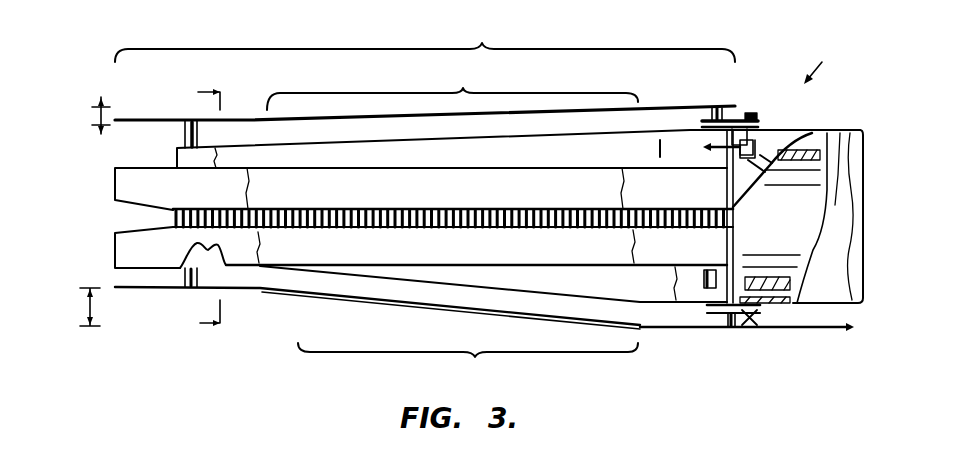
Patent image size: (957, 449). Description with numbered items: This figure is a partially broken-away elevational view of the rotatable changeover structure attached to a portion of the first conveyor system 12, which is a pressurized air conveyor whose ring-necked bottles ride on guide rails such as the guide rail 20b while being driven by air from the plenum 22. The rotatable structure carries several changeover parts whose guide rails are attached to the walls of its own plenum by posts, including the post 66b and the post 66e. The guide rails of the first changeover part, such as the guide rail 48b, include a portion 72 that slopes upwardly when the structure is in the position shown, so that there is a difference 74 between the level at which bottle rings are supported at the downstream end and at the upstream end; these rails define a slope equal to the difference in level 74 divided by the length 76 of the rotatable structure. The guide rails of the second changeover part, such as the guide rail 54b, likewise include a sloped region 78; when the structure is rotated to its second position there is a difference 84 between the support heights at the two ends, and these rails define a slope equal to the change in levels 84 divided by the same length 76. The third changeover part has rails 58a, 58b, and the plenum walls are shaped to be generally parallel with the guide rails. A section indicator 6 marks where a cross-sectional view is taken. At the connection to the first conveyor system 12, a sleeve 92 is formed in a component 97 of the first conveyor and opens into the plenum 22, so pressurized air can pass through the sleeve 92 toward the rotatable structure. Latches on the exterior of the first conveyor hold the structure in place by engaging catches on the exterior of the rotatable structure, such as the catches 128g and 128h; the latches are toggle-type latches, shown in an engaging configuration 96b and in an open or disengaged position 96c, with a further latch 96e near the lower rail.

The length of the rotatable structure 76 is at (425, 41).
The sloped region 78 is at (452, 88).
The second guide rail of the second changeover part 54b is at (167, 114).
The difference in height 84 is at (92, 113).
The section line 6 is at (200, 207).
The post 66b is at (183, 135).
The first rail of the third changeover part 58a is at (118, 196).
The second rail of the third changeover part 58b is at (127, 254).
The post 66e is at (187, 284).
The difference in level 74 is at (92, 306).
The second guide rail of the first changeover part 48b is at (520, 316).
The guide rail 20b is at (790, 330).
The upwardly sloping portion 72 is at (475, 357).
The latch in engaging configuration 96b is at (735, 120).
The latch in disengaged position 96c is at (748, 130).
The catch 128g is at (709, 143).
The sleeve 92 is at (808, 130).
The plenum 22 is at (760, 165).
The component of the first conveyor 97 is at (822, 282).
The catch 128h is at (706, 283).
The latch 96e is at (733, 330).
The first conveyor system 12 is at (825, 67).